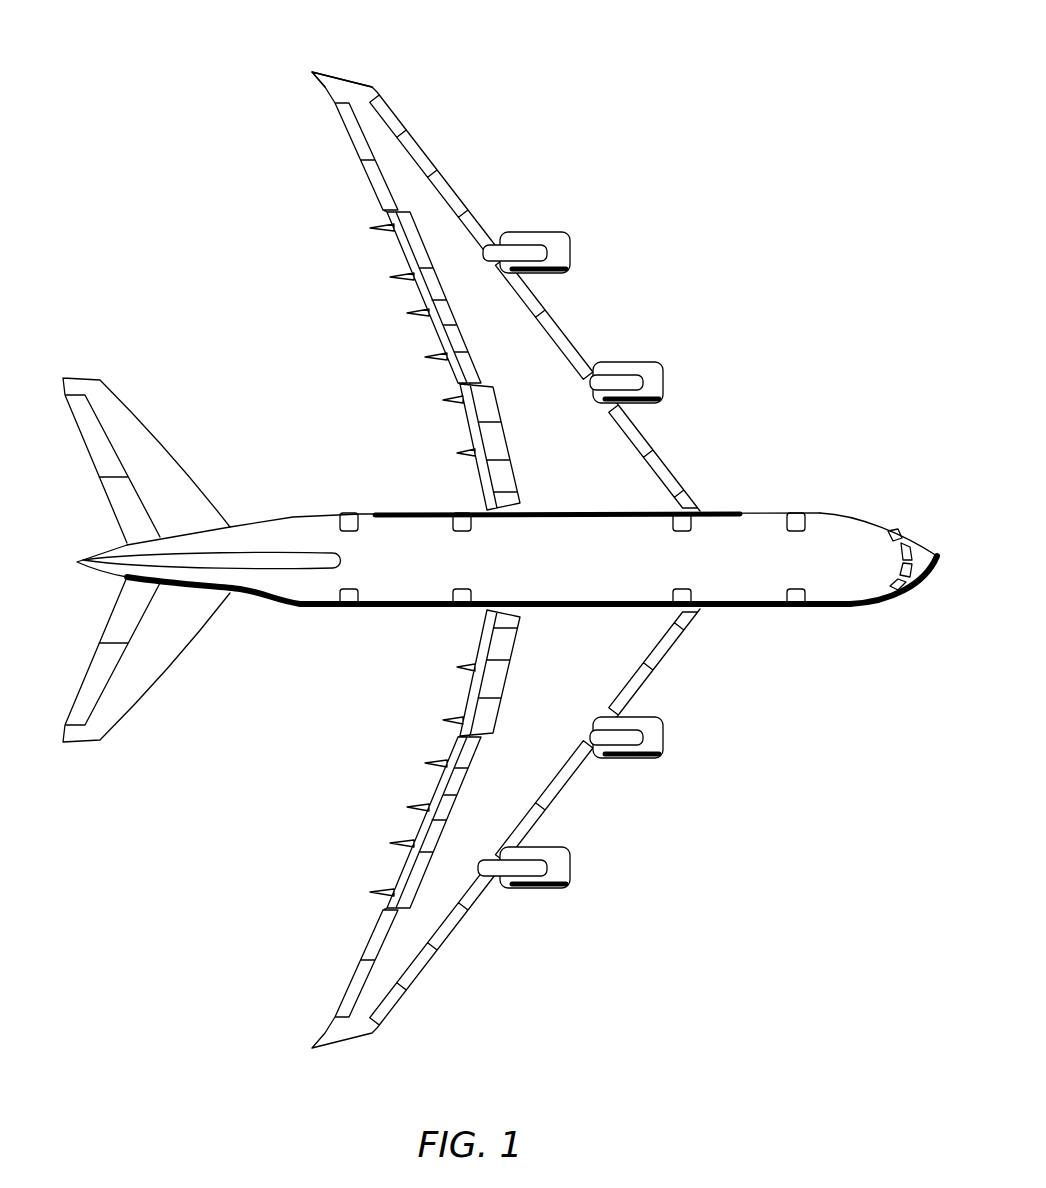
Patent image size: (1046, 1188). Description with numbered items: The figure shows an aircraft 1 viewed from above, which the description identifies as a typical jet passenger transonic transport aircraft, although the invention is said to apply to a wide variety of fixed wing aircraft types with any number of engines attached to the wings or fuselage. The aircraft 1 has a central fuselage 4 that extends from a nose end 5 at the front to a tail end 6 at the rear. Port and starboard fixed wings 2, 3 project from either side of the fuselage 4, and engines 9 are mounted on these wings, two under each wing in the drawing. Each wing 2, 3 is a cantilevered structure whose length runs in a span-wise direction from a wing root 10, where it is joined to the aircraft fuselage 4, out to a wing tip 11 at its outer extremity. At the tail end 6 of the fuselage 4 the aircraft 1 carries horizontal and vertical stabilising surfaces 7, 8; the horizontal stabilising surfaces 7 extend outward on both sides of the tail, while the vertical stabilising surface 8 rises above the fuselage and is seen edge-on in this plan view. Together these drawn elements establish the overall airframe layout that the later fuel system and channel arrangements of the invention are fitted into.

The aircraft 1 is at (795, 204).
The port fixed wing 2 is at (518, 333).
The starboard fixed wing 3 is at (530, 753).
The fuselage 4 is at (405, 535).
The nose end 5 is at (937, 555).
The tail end 6 is at (82, 565).
The horizontal stabilising surface 7 is at (162, 465).
The vertical stabilising surface 8 is at (233, 560).
The engine 9 is at (553, 245).
The wing root 10 is at (600, 507).
The wing tip 11 is at (314, 71).